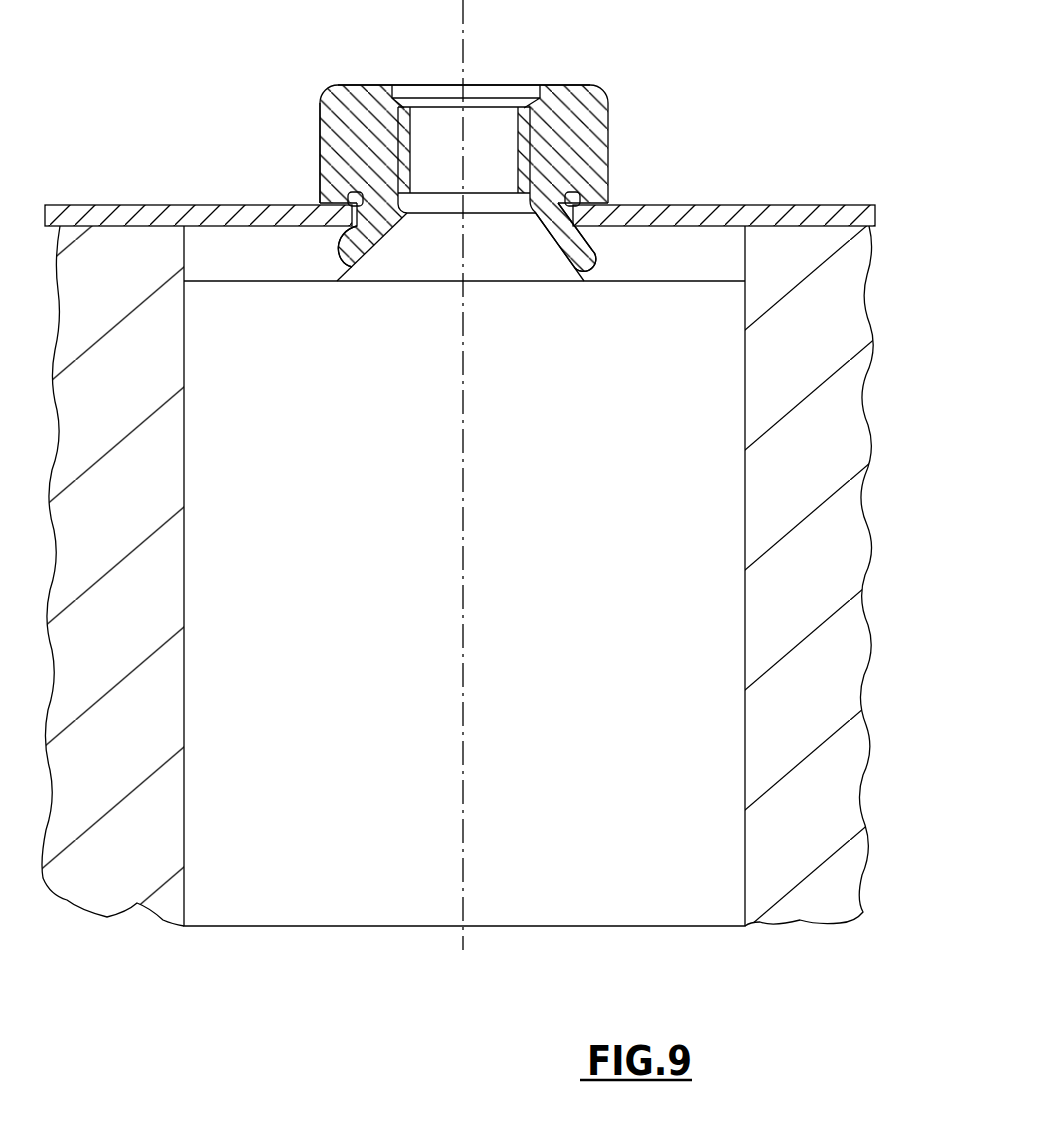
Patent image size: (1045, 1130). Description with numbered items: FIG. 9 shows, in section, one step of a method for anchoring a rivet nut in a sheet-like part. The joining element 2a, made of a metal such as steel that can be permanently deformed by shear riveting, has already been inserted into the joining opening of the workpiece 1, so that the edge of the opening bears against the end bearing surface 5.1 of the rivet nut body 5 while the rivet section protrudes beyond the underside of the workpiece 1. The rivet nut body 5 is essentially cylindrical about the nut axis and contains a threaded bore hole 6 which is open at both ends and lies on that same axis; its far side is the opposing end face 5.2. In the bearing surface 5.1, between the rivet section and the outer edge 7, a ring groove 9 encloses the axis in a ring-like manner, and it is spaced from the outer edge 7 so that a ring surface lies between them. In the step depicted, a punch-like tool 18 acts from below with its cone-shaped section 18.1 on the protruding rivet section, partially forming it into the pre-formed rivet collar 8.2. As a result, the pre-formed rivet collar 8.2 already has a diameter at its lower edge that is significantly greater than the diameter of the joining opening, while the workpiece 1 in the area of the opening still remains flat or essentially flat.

The workpiece 1 is at (735, 205).
The joining element 2a is at (656, 150).
The rivet nut body 5 is at (593, 132).
The end bearing surface 5.1 is at (330, 205).
The opposing end face 5.2 is at (557, 87).
The bore hole 6 is at (522, 135).
The outer edge 7 is at (320, 110).
The pre-formed rivet collar 8.2 is at (580, 262).
The ring groove 9 is at (353, 192).
The punch-like tool 18 is at (370, 873).
The cone-shaped section 18.1 is at (420, 260).